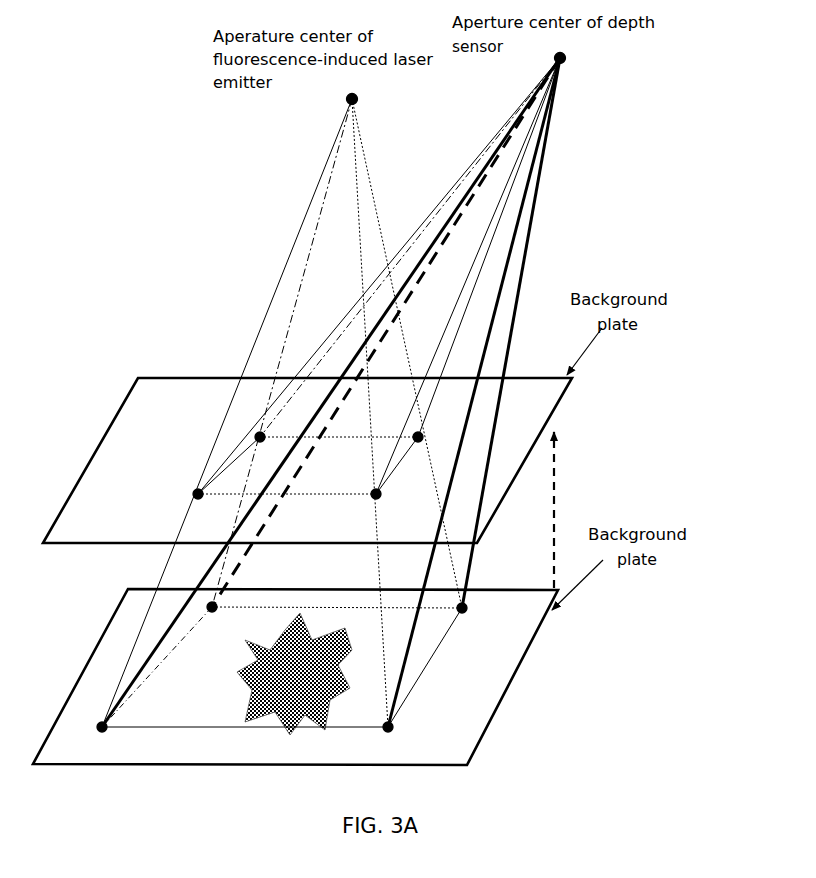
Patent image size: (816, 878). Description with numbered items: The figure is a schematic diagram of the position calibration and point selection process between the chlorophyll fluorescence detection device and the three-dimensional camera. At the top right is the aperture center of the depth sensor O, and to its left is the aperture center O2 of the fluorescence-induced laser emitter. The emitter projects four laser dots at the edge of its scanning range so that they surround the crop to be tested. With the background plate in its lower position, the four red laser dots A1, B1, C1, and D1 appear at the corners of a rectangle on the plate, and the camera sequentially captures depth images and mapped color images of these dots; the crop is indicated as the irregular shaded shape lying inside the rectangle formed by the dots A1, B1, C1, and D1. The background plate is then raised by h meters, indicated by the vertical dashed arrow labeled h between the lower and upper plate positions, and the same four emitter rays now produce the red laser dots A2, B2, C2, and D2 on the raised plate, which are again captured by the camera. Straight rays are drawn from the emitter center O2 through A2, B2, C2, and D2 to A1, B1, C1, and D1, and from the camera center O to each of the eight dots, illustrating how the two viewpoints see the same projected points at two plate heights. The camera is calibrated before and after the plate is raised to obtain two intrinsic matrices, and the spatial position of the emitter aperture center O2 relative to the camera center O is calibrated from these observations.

The aperture center of depth sensor O is at (573, 69).
The aperture center of the fluorescence-induced laser emitter O2 is at (368, 101).
The red laser dot A1 is at (89, 738).
The red laser dot B1 is at (401, 738).
The red laser dot C1 is at (474, 619).
The red laser dot D1 is at (220, 620).
The red laser dot A2 is at (184, 494).
The red laser dot B2 is at (389, 494).
The red laser dot C2 is at (431, 447).
The red laser dot D2 is at (267, 449).
The raising height of the background plate h is at (563, 510).